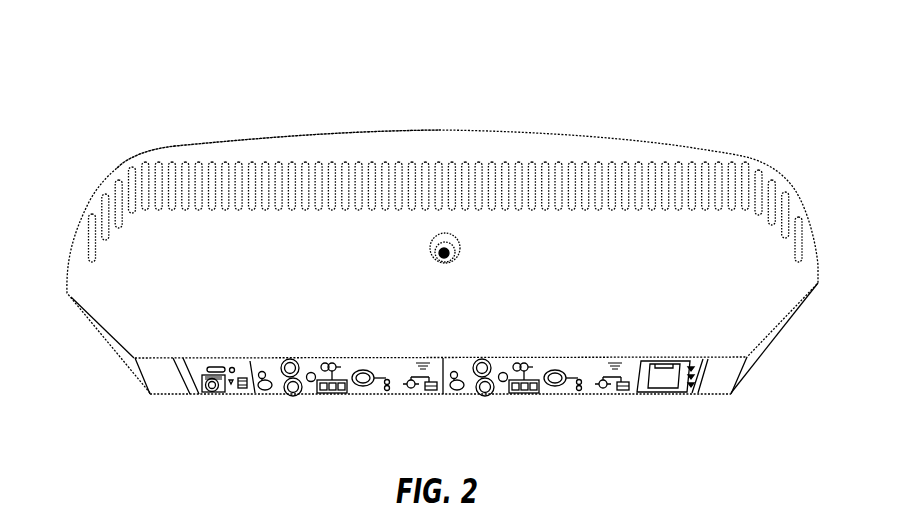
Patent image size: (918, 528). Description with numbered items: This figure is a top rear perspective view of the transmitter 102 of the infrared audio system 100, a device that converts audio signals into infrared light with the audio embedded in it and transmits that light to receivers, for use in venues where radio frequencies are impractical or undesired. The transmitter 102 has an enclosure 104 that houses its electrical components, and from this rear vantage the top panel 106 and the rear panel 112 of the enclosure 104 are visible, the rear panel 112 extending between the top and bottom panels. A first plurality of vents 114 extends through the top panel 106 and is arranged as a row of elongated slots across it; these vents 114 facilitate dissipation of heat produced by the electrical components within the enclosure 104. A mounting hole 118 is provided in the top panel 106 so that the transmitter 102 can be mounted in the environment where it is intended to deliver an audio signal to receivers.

The infrared audio system 100 is at (512, 114).
The infrared transmitter 102 is at (172, 157).
The enclosure 104 is at (83, 273).
The top panel 106 is at (793, 278).
The rear panel 112 is at (722, 373).
The first plurality of vents 114 is at (618, 157).
The mounting hole 118 is at (432, 257).